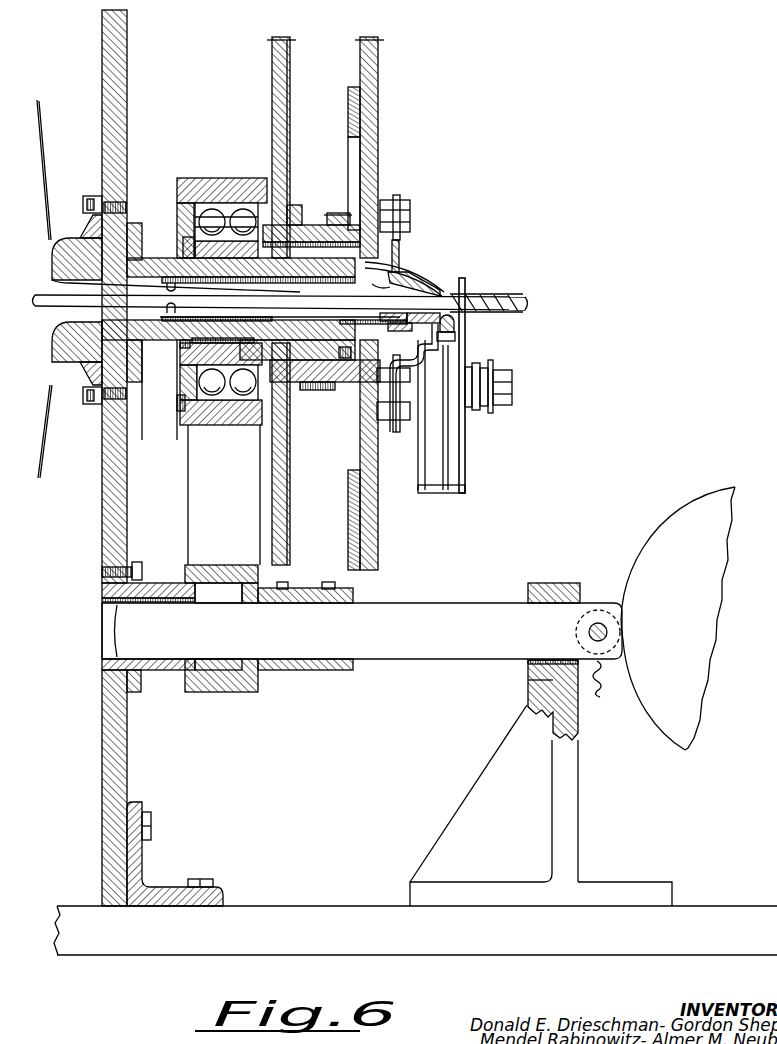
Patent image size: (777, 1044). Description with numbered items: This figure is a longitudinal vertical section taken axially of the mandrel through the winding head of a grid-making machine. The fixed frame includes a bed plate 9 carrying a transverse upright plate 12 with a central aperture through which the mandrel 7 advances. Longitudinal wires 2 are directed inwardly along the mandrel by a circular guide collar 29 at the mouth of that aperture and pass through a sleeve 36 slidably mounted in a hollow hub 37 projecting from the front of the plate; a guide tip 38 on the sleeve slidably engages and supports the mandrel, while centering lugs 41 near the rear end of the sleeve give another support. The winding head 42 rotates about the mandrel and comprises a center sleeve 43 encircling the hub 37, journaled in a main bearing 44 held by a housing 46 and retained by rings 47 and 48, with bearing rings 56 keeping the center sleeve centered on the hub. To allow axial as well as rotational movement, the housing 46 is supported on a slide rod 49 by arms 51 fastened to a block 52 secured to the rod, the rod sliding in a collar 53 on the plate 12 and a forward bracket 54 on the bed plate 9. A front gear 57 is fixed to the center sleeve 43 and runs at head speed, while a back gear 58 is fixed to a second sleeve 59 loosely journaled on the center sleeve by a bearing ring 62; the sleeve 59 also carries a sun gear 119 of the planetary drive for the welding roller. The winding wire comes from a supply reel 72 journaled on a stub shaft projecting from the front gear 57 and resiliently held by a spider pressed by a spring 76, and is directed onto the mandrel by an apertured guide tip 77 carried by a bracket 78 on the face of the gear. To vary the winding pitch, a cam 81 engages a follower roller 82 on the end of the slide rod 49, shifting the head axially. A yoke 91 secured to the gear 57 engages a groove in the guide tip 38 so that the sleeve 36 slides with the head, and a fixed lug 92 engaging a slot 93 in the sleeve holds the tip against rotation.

The wires 2 is at (46, 156).
The mandrel 7 is at (62, 298).
The bed plate 9 is at (140, 940).
The upright plate 12 is at (110, 27).
The guide collar 29 is at (60, 236).
The sleeve 36 is at (370, 323).
The hollow hub 37 is at (158, 258).
The guide tip 38 is at (432, 266).
The centering lugs 41 is at (153, 342).
The winding head 42 is at (407, 78).
The center sleeve 43 is at (309, 240).
The main bearing 44 is at (226, 205).
The bearing housing 46 is at (240, 177).
The retaining ring 47 is at (188, 370).
The retaining ring 48 is at (185, 428).
The slide rod 49 is at (445, 655).
The arms 51 is at (200, 516).
The block 52 is at (245, 692).
The collar 53 is at (160, 672).
The forward bracket 54 is at (572, 802).
The bearing rings 56 is at (222, 426).
The front gear 57 is at (380, 127).
The back gear 58 is at (284, 80).
The second sleeve 59 is at (322, 380).
The bearing ring 62 is at (290, 227).
The supply reel 72 is at (467, 455).
The spring 76 is at (478, 362).
The winding guide tip 77 is at (456, 331).
The bracket 78 is at (400, 400).
The cam 81 is at (668, 535).
The follower roller 82 is at (605, 689).
The yoke 91 is at (400, 242).
The fixed lug 92 is at (373, 285).
The slot 93 is at (405, 270).
The sun gear 119 is at (337, 213).